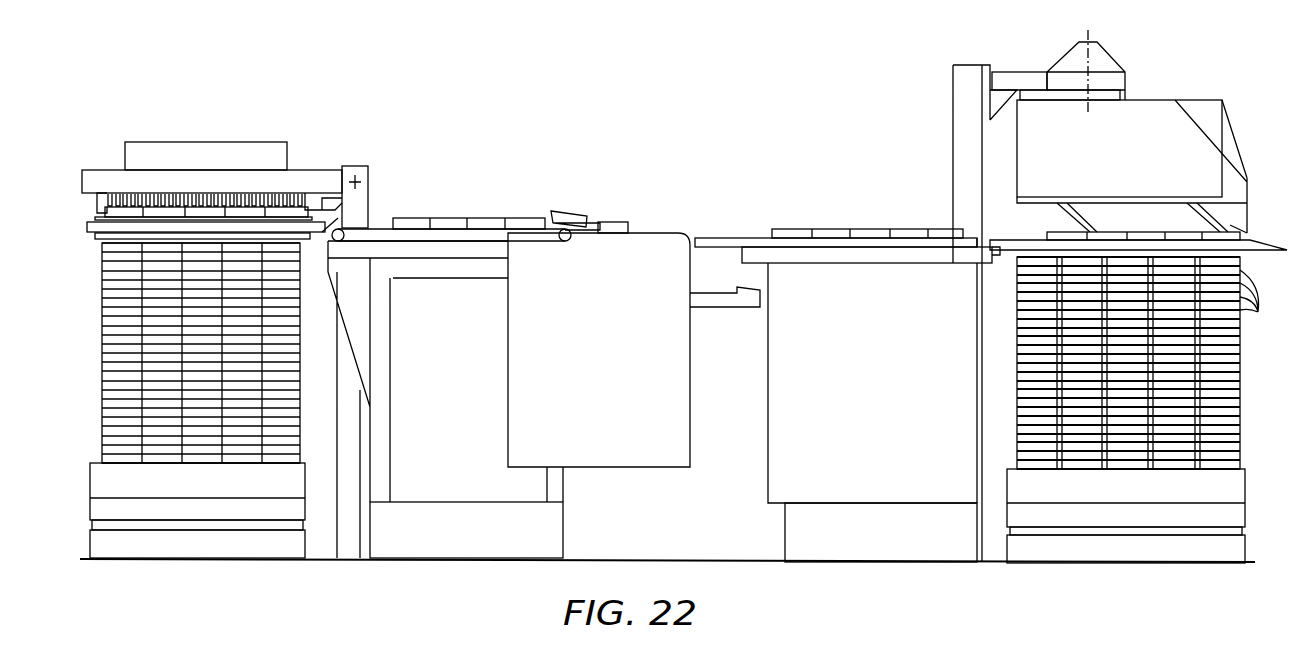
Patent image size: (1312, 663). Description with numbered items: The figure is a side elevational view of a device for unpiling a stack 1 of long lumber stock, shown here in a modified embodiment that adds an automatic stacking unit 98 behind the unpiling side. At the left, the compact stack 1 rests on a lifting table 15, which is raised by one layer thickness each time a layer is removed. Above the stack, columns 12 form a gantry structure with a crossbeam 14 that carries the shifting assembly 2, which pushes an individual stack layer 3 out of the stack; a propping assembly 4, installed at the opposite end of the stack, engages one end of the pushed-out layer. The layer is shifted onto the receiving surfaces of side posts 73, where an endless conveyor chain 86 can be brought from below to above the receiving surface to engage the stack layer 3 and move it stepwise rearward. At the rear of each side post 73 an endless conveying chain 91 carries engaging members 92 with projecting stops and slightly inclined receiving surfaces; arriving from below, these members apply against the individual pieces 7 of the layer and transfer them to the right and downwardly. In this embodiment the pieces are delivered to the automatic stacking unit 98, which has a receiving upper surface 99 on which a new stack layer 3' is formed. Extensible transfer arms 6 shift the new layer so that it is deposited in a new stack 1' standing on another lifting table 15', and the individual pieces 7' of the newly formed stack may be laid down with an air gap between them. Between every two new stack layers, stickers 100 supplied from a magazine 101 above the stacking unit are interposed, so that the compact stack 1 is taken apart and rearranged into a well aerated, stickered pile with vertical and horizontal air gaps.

The stack 1 is at (201, 353).
The new stack 1' is at (1149, 363).
The shifting assembly 2 is at (124, 170).
The stack layer 3 is at (469, 180).
The new stack layer 3' is at (867, 202).
The propping assembly 4 is at (87, 233).
The transfer arms 6 is at (1268, 249).
The individual pieces of lumber 7 is at (575, 179).
The individual pieces of the newly formed stack 7' is at (1259, 192).
The columns 12 is at (360, 206).
The crossbeam 14 is at (308, 180).
The lifting table 15 is at (197, 534).
The lifting table 15' is at (1126, 536).
The side posts 73 is at (462, 401).
The endless conveyor chain 86 is at (497, 227).
The endless conveying chain 91 is at (647, 288).
The engaging members 92 is at (615, 228).
The automatic stacking unit 98 is at (876, 402).
The receiving upper surface 99 is at (742, 240).
The stickers 100 is at (1266, 310).
The magazine 101 is at (1172, 118).